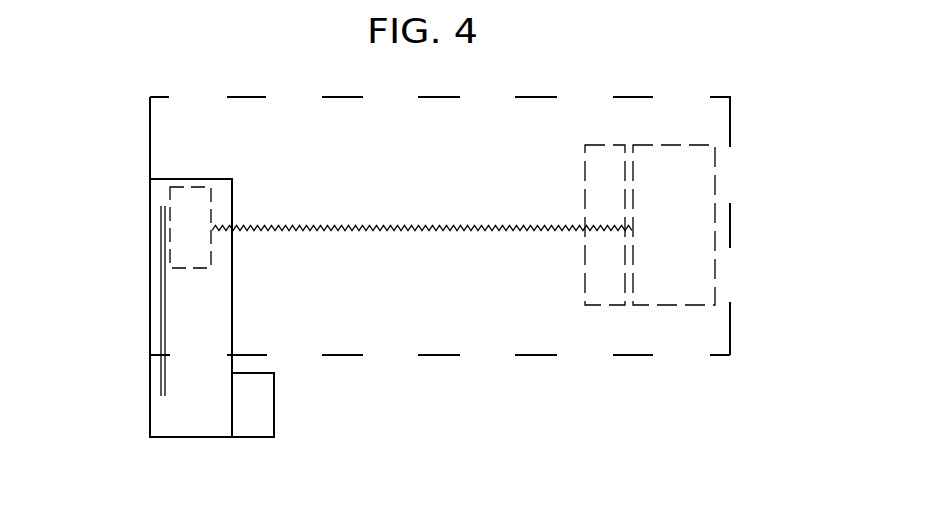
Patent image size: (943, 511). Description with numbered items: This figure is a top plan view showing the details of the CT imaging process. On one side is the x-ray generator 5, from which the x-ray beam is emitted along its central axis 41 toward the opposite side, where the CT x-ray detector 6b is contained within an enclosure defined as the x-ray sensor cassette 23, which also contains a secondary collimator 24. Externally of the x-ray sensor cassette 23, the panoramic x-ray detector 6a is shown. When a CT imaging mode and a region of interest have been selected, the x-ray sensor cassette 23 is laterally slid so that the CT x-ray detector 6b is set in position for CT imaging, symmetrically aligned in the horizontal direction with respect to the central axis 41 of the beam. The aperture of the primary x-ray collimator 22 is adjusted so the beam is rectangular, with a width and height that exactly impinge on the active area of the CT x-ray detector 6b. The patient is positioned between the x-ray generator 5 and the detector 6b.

The x-ray generator 5 is at (695, 259).
The panoramic x-ray detector 6a is at (257, 400).
The CT x-ray detector 6b is at (189, 202).
The primary x-ray collimator 22 is at (603, 290).
The x-ray sensor cassette 23 is at (148, 240).
The secondary collimator 24 is at (160, 302).
The central axis of the x-ray beam 41 is at (422, 211).